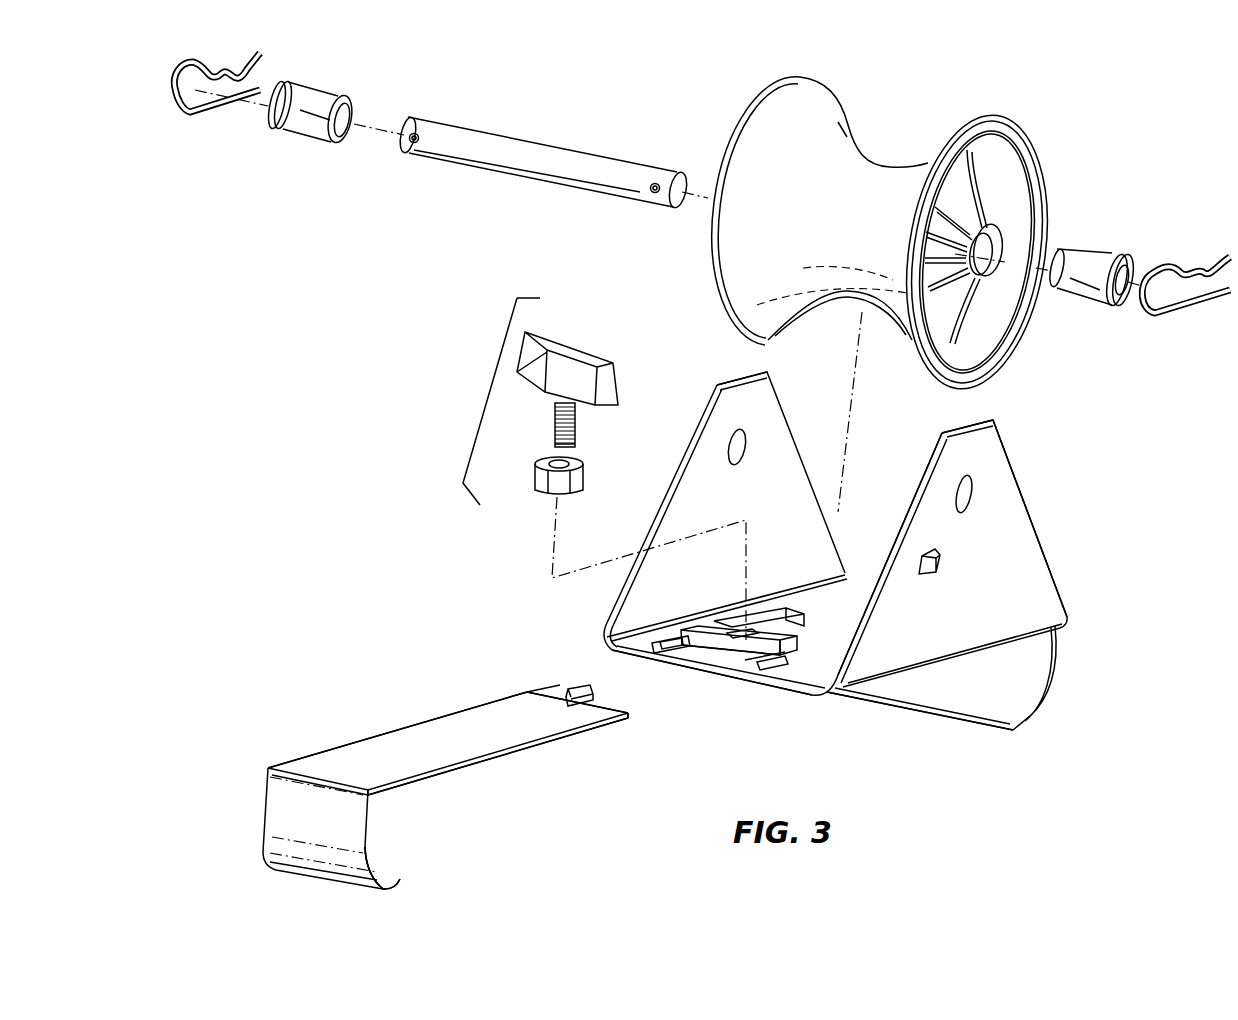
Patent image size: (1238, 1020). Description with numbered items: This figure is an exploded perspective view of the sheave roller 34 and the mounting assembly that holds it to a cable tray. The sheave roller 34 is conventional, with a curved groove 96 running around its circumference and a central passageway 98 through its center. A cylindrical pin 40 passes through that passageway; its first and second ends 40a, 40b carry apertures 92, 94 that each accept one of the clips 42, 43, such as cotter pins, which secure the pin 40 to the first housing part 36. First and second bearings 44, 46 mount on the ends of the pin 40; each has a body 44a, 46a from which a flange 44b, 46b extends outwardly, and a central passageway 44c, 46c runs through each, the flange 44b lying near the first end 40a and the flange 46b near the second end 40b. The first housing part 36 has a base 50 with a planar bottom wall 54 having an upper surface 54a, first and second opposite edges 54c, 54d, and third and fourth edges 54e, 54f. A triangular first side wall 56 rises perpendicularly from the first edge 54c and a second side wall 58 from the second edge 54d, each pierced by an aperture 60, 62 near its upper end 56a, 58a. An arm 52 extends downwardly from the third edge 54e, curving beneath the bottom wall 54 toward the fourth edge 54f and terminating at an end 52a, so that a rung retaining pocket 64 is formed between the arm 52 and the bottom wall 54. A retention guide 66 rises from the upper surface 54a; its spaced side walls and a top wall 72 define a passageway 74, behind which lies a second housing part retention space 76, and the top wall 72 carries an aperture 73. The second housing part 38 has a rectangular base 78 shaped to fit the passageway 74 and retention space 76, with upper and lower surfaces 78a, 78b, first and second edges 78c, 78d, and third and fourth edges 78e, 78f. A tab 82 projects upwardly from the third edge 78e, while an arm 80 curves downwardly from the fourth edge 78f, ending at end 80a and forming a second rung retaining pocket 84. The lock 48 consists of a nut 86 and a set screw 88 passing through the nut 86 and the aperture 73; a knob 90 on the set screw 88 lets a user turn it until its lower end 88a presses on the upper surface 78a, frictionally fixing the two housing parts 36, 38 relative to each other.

The sheave roller 34 is at (897, 228).
The first housing part 36 is at (1031, 498).
The second housing part 38 is at (413, 752).
The pin 40 is at (530, 177).
The first end 40a is at (402, 131).
The second end 40b is at (683, 178).
The clip 42 is at (177, 110).
The clip 43 is at (1175, 262).
The first bearing 44 is at (326, 121).
The body 44a is at (303, 133).
The flange 44b is at (272, 124).
The central passageway 44c is at (350, 112).
The second bearing 46 is at (1104, 275).
The body 46a is at (1084, 300).
The flange 46b is at (1118, 306).
The central passageway 46c is at (1125, 276).
The lock 48 is at (535, 397).
The base 50 is at (839, 559).
The arm 52 is at (974, 703).
The end 52a is at (945, 718).
The bottom wall 54 is at (750, 599).
The upper surface 54a is at (654, 647).
The first edge 54c is at (657, 628).
The second edge 54d is at (822, 698).
The third edge 54e is at (873, 598).
The fourth edge 54f is at (745, 675).
The first side wall 56 is at (724, 494).
The upper end 56a is at (722, 380).
The second side wall 58 is at (969, 534).
The upper end 58a is at (978, 421).
The aperture 60 is at (748, 443).
The aperture 62 is at (975, 492).
The rung retaining pocket 64 is at (1010, 665).
The retention guide 66 is at (757, 672).
The top wall 72 is at (745, 648).
The aperture 73 is at (730, 634).
The passageway 74 is at (742, 657).
The second housing part retention space 76 is at (800, 608).
The base 78 is at (438, 731).
The upper surface 78a is at (370, 758).
The lower surface 78b is at (433, 782).
The first edge 78c is at (468, 710).
The second edge 78d is at (556, 744).
The third edge 78e is at (545, 690).
The fourth edge 78f is at (292, 777).
The arm 80 is at (325, 839).
The end 80a is at (400, 883).
The tab 82 is at (585, 688).
The rung retaining pocket 84 is at (378, 826).
The nut 86 is at (535, 476).
The set screw 88 is at (550, 425).
The lower end 88a is at (553, 448).
The knob 90 is at (566, 345).
The aperture 92 is at (415, 143).
The aperture 94 is at (654, 190).
The curved groove 96 is at (902, 162).
The central passageway 98 is at (985, 248).